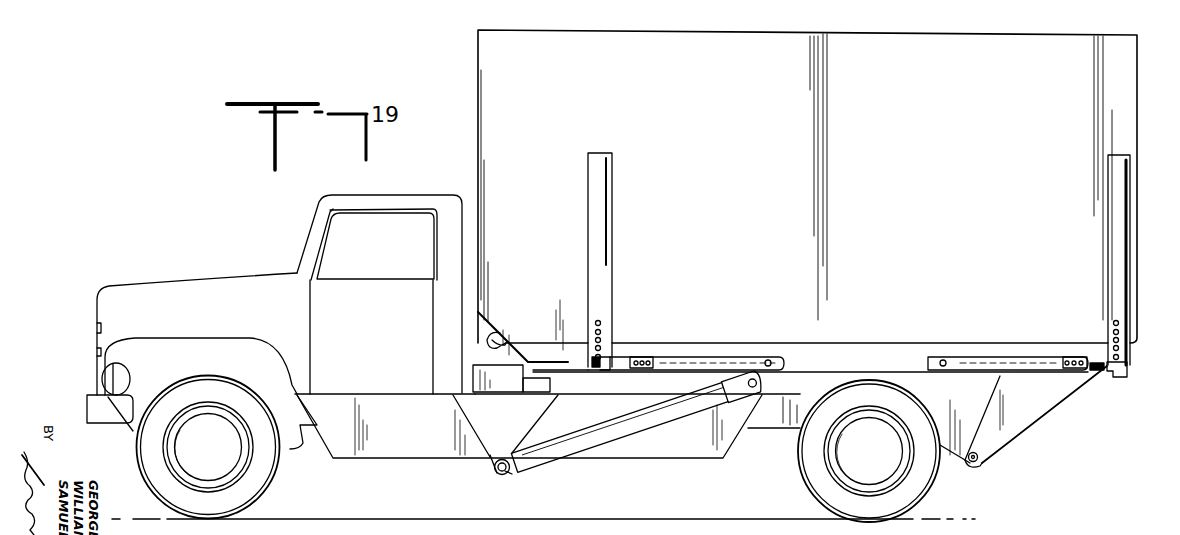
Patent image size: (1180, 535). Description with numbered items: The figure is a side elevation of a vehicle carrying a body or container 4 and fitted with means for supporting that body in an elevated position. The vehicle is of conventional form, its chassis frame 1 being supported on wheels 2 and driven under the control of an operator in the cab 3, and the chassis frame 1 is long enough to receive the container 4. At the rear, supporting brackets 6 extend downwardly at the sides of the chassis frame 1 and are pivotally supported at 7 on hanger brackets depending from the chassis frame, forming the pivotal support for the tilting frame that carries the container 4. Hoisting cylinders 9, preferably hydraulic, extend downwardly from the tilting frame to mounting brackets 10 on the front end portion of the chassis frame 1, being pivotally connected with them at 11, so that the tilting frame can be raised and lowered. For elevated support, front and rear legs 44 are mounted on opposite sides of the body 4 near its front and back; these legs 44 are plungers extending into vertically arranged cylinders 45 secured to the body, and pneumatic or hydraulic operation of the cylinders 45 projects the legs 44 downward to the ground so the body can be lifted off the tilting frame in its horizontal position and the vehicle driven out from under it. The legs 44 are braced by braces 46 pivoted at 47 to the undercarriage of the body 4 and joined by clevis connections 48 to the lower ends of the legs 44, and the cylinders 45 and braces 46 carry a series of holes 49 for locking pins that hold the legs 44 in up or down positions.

The chassis frame 1 is at (770, 429).
The wheels 2 is at (926, 491).
The cab 3 is at (395, 199).
The container 4 is at (1137, 80).
The supporting brackets 6 is at (1033, 409).
The pivot 7 is at (980, 456).
The hoisting cylinders 9 is at (624, 426).
The mounting brackets 10 is at (496, 468).
The pivotal connection 11 is at (506, 473).
The legs 44 is at (592, 368).
The cylinders 45 is at (604, 207).
The braces 46 is at (737, 357).
The pivot 47 is at (769, 359).
The clevis connections 48 is at (1128, 365).
The holes 49 is at (652, 358).